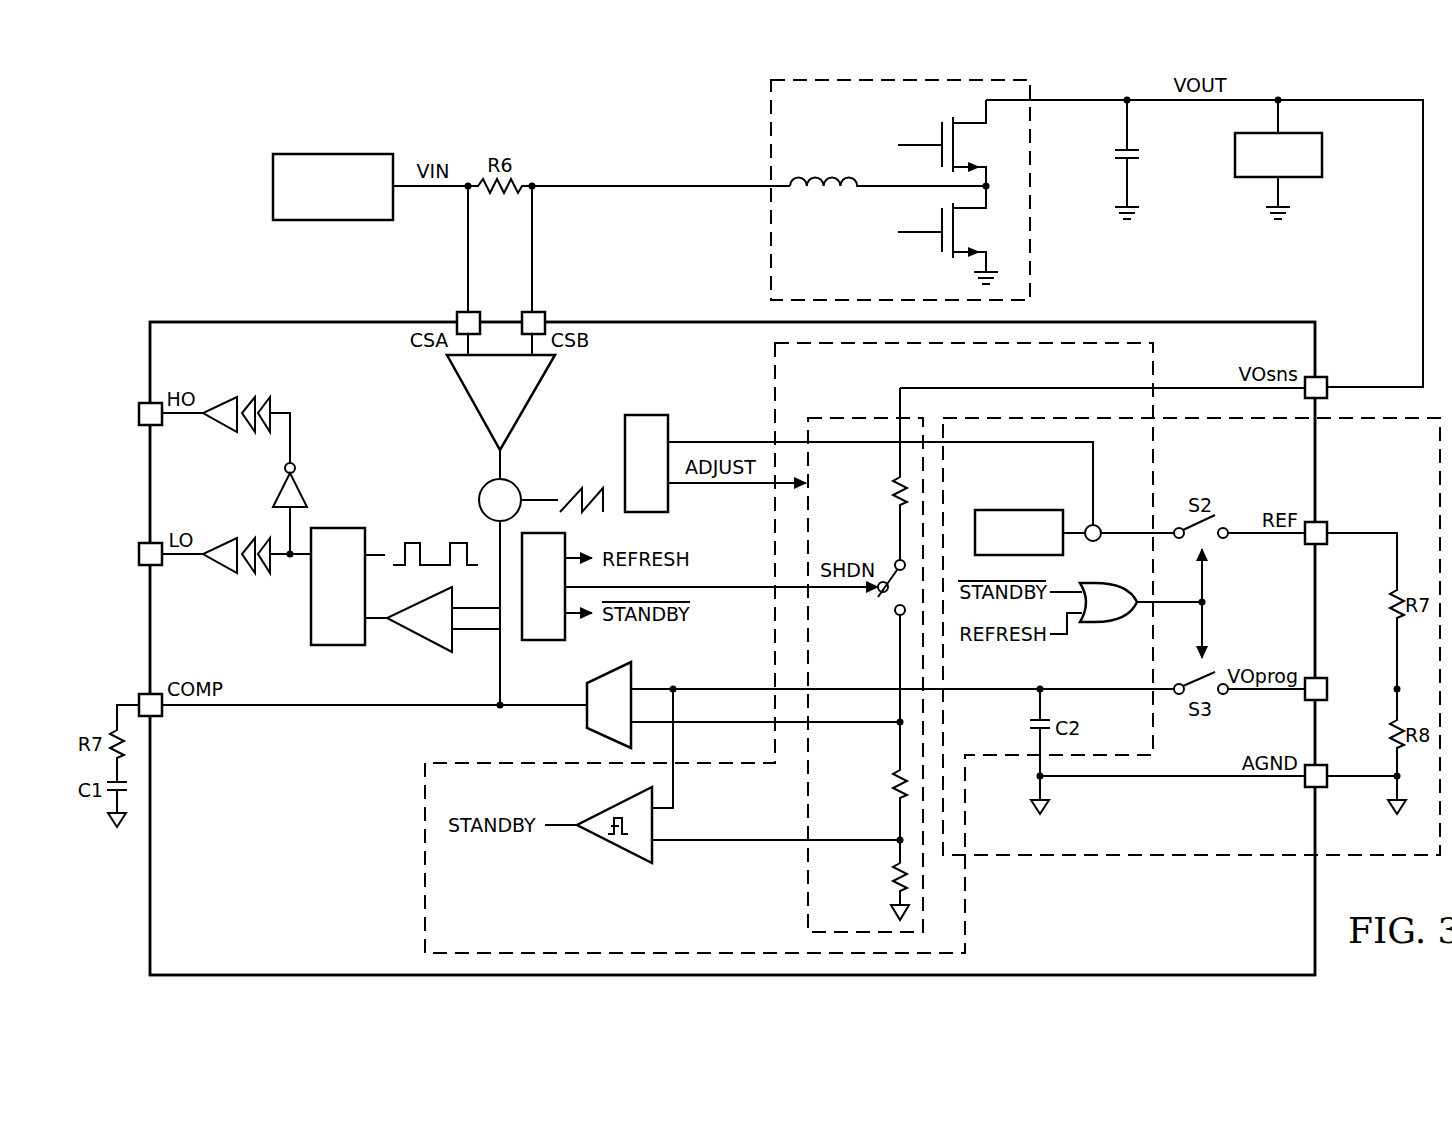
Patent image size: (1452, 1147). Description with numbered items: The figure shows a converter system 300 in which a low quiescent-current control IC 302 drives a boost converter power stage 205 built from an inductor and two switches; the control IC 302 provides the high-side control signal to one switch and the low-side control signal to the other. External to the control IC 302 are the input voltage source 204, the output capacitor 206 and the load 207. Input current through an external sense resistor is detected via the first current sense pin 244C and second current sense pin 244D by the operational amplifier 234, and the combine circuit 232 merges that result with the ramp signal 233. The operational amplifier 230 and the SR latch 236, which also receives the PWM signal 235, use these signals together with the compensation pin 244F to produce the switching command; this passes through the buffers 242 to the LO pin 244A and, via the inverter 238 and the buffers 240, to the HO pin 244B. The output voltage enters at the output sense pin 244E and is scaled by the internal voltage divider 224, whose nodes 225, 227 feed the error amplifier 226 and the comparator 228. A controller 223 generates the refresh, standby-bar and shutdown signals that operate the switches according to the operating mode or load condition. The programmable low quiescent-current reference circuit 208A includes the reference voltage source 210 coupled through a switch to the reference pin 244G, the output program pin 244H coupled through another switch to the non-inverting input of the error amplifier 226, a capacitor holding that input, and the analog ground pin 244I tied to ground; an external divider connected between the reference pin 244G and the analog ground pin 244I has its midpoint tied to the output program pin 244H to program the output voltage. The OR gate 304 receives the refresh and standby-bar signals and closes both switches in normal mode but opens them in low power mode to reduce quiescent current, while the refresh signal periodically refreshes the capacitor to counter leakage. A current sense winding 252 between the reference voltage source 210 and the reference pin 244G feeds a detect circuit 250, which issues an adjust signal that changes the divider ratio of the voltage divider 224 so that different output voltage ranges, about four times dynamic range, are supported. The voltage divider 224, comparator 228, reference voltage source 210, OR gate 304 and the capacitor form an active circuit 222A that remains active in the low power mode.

The converter system 300 is at (191, 154).
The VIN source 204 is at (333, 154).
The power stage 205 is at (771, 140).
The output capacitor 206 is at (1123, 108).
The load 207 is at (1322, 155).
The low Iq control IC 302 is at (295, 321).
The LO pin 244A is at (144, 544).
The HO pin 244B is at (144, 403).
The CSA pin 244C is at (457, 318).
The CSB pin 244D is at (546, 318).
The VOsns pin 244E is at (1327, 377).
The COMP pin 244F is at (144, 695).
The REF pin 244G is at (1327, 525).
The VOprog pin 244H is at (1327, 703).
The AGND pin 244I is at (1326, 789).
The buffers 240 is at (218, 402).
The buffers 242 is at (217, 568).
The inverter 238 is at (306, 492).
The operational amplifier 234 is at (470, 405).
The combine circuit 232 is at (483, 487).
The ramp signal 233 is at (566, 498).
The PWM signal 235 is at (408, 540).
The SR latch 236 is at (311, 590).
The operational amplifier 230 is at (419, 640).
The controller 223 is at (543, 640).
The detect circuit 250 is at (648, 415).
The voltage divider 224 is at (864, 416).
The divider node 225 is at (897, 723).
The divider node 227 is at (897, 839).
The error amplifier 226 is at (587, 715).
The comparator 228 is at (613, 848).
The standby-active circuitry 222A is at (422, 887).
The programmable low Iq reference circuit 208A is at (1208, 861).
The VREF source 210 is at (1018, 510).
The current sense winding 252 is at (1100, 527).
The OR gate 304 is at (1103, 628).